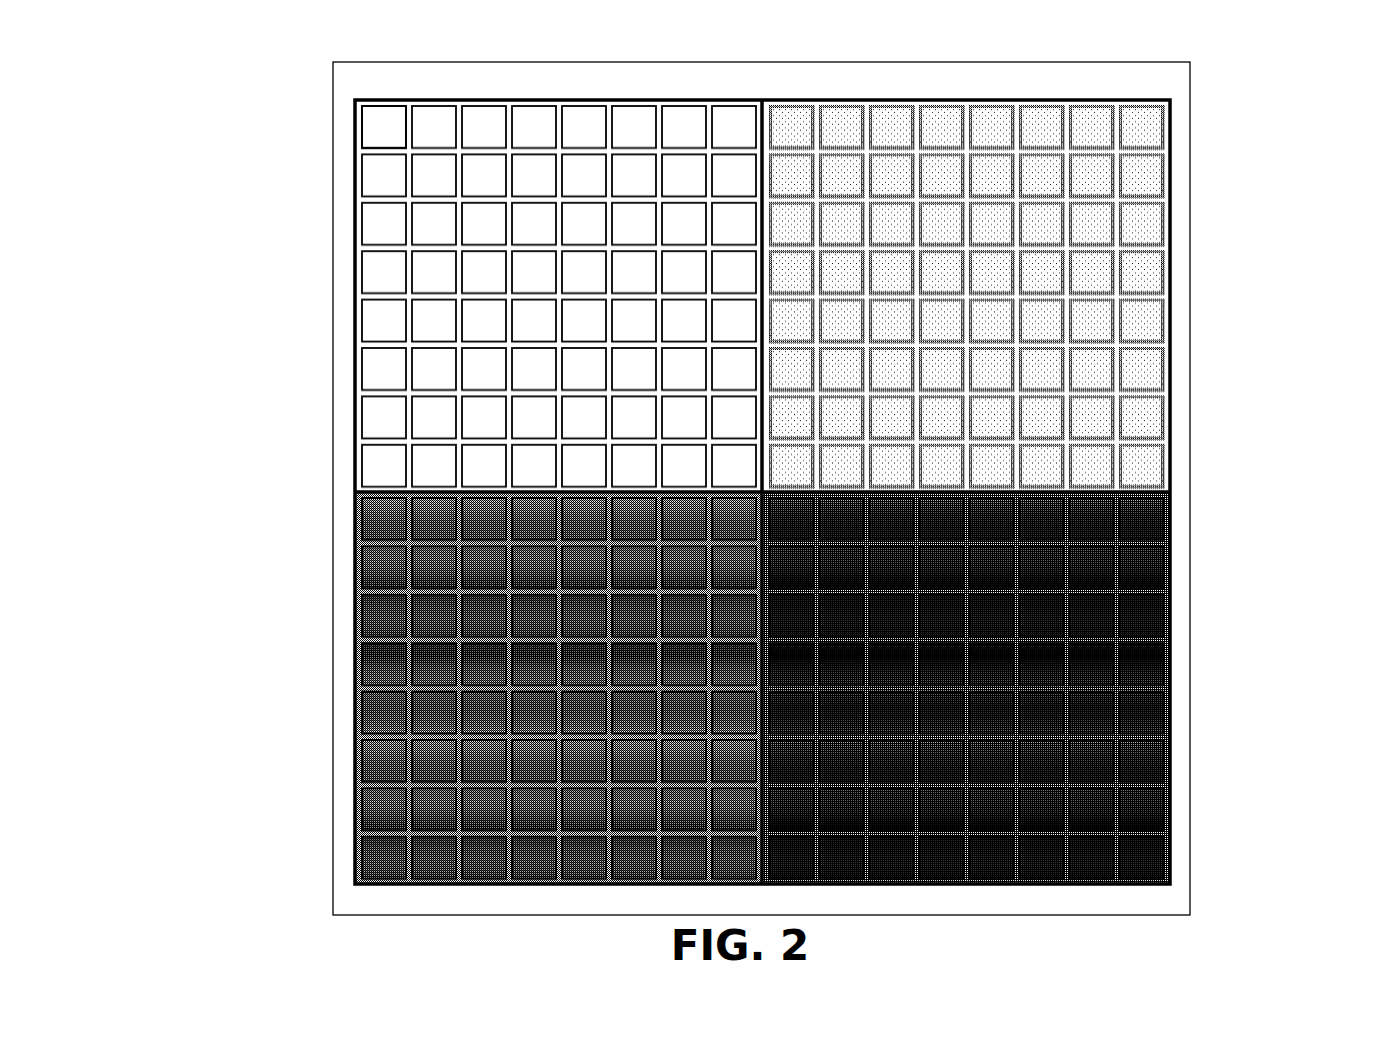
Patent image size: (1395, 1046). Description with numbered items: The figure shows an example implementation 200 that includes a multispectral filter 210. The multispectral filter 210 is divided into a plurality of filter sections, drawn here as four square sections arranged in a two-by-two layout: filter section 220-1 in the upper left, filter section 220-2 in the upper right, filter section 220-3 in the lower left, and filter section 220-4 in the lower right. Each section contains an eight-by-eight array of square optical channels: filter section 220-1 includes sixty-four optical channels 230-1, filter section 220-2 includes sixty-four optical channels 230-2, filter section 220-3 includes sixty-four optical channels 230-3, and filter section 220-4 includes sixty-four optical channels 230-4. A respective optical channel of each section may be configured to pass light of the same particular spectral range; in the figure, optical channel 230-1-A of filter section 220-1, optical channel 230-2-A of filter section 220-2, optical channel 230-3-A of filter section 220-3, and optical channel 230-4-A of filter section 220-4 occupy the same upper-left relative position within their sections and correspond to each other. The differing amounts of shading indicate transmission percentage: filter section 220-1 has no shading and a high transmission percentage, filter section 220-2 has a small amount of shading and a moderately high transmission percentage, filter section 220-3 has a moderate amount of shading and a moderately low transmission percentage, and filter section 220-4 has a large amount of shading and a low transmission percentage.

The example implementation 200 is at (236, 64).
The multispectral filter 210 is at (764, 478).
The filter section 220-1 is at (463, 295).
The filter section 220-2 is at (1063, 282).
The filter section 220-3 is at (463, 688).
The filter section 220-4 is at (1063, 676).
The optical channels 230-1 is at (475, 295).
The optical channel 230-1-A is at (300, 136).
The optical channels 230-2 is at (1053, 282).
The optical channel 230-2-A is at (794, 124).
The optical channels 230-3 is at (475, 690).
The optical channel 230-3-A is at (300, 540).
The optical channels 230-4 is at (1053, 676).
The optical channel 230-4-A is at (794, 520).